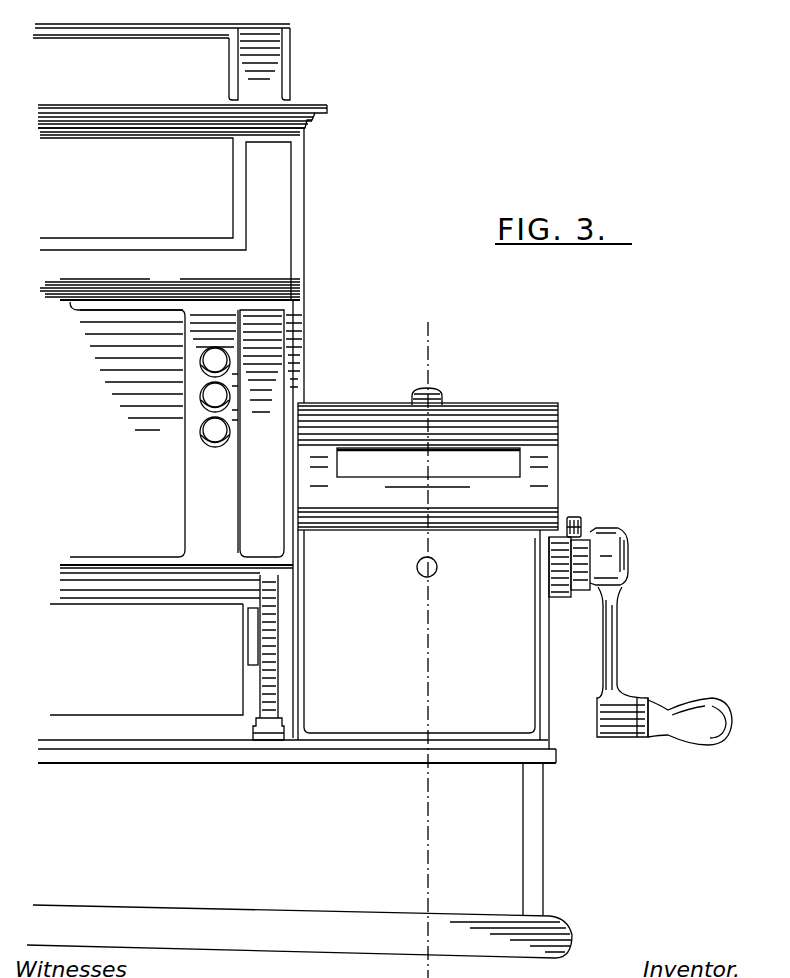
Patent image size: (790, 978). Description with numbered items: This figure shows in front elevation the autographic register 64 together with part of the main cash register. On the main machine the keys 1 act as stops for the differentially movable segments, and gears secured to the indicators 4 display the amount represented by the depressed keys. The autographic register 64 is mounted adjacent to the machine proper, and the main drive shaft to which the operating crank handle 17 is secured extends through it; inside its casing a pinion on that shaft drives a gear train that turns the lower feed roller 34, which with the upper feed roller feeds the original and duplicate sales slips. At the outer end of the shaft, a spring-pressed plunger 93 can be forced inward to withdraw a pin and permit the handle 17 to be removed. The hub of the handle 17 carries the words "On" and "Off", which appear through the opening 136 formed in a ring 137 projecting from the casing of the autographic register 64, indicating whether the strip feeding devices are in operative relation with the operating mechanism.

The keys 1 is at (204, 432).
The indicators 4 is at (442, 319).
The lower feed roller 34 is at (390, 500).
The autographic register 64 is at (378, 703).
The plunger 93 is at (628, 550).
The opening 136 is at (580, 517).
The ring 137 is at (560, 557).
The operating crank handle 17 is at (618, 647).